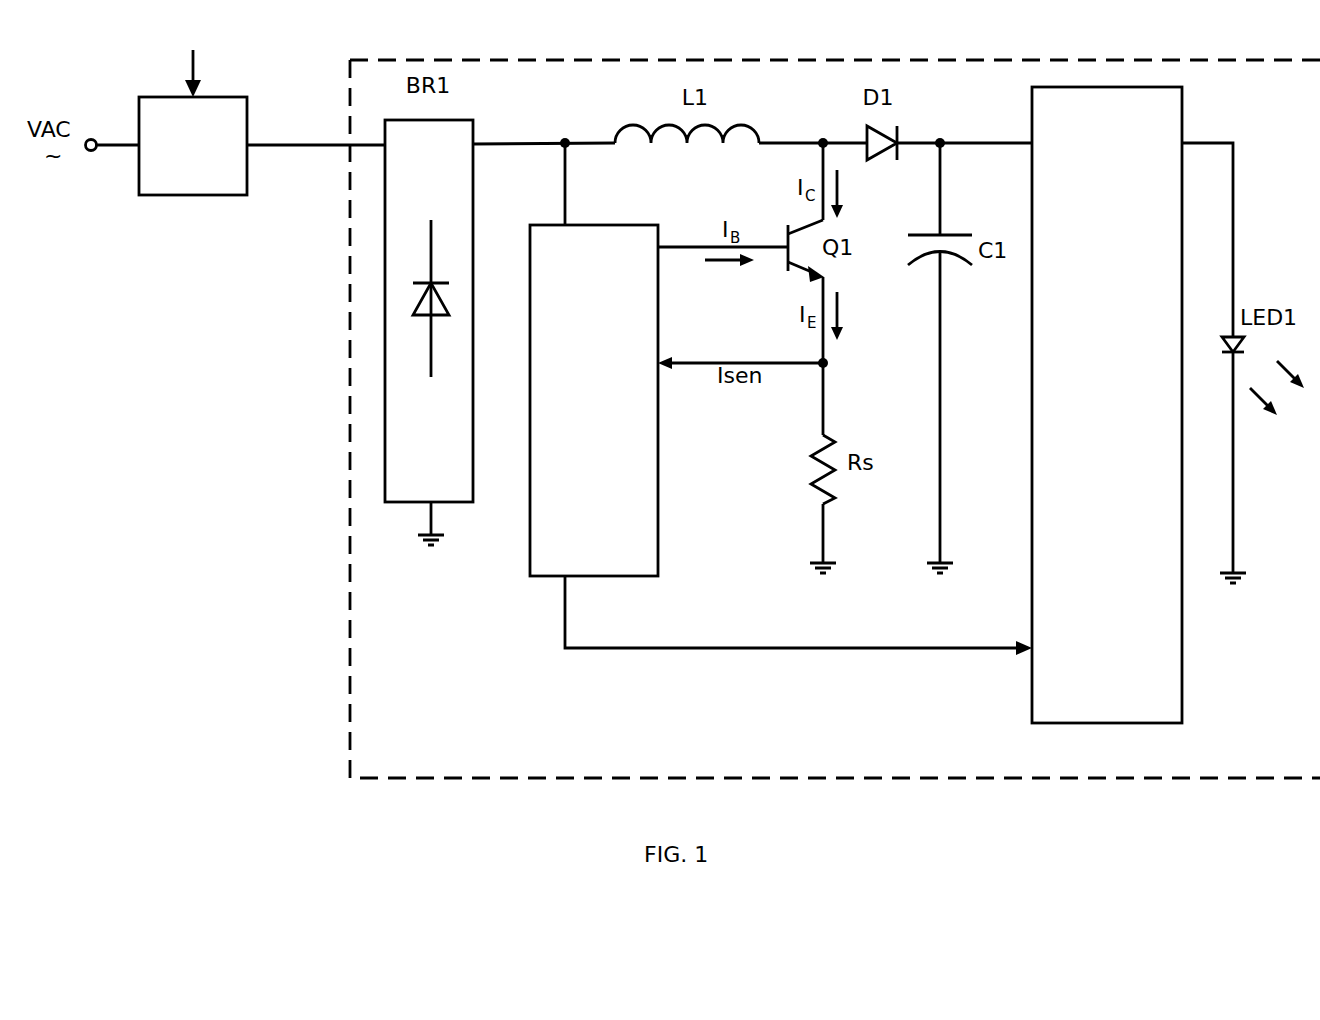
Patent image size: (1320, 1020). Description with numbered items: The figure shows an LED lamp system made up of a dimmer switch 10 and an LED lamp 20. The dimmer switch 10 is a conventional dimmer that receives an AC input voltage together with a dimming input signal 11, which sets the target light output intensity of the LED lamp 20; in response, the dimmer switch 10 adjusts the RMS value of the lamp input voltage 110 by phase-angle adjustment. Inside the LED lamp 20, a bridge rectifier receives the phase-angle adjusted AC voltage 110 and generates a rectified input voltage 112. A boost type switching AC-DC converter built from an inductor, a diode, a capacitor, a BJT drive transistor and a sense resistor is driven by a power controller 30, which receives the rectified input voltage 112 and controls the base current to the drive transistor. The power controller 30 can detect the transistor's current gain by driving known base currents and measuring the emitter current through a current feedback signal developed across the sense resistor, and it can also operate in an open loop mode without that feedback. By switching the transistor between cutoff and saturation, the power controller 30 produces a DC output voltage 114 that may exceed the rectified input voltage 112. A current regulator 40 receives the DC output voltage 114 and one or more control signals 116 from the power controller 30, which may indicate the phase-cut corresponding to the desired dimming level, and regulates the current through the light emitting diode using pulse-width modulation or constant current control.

The dimmer switch 10 is at (193, 146).
The dimming input signal 11 is at (193, 58).
The LED lamp 20 is at (349, 740).
The power controller 30 is at (594, 400).
The current regulator 40 is at (1107, 405).
The lamp input voltage 110 is at (268, 144).
The rectified input voltage 112 is at (530, 143).
The DC output voltage 114 is at (940, 137).
The control signals 116 is at (685, 648).